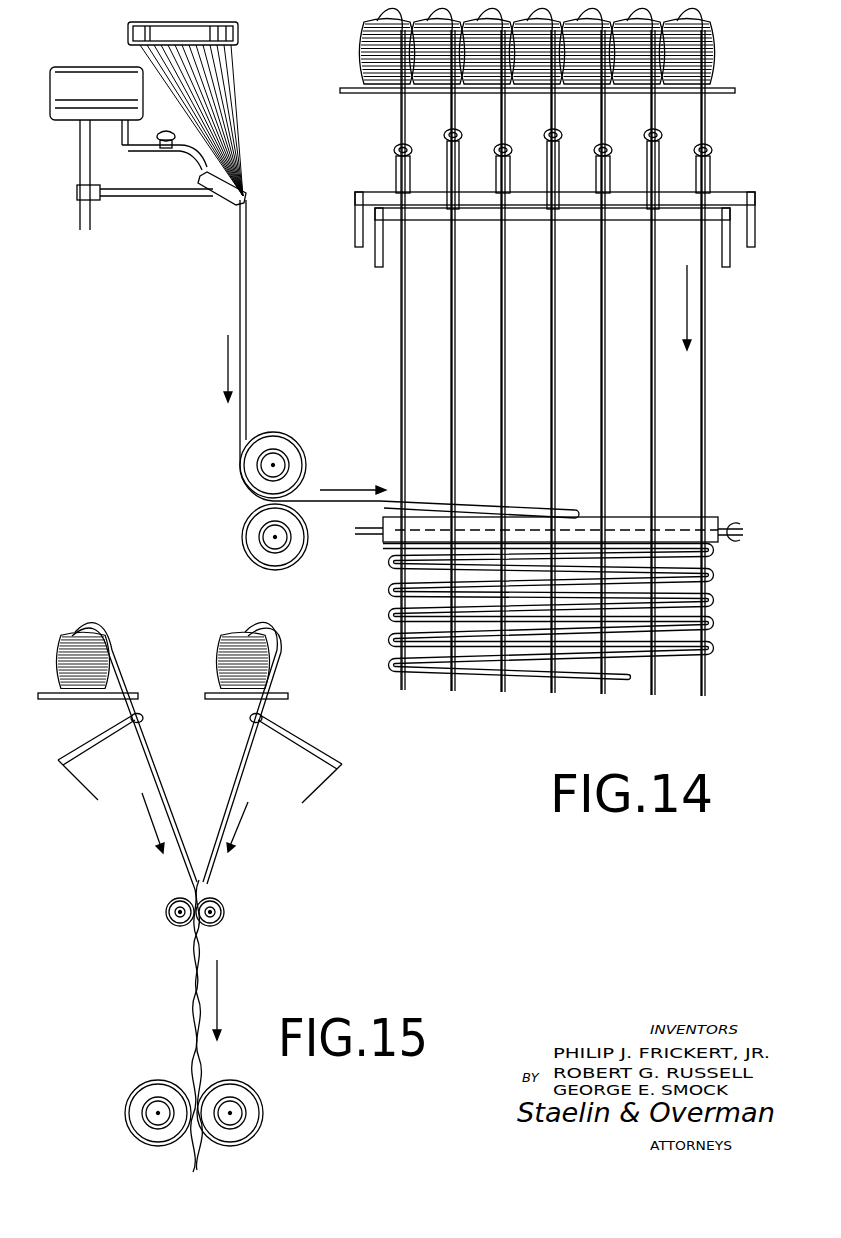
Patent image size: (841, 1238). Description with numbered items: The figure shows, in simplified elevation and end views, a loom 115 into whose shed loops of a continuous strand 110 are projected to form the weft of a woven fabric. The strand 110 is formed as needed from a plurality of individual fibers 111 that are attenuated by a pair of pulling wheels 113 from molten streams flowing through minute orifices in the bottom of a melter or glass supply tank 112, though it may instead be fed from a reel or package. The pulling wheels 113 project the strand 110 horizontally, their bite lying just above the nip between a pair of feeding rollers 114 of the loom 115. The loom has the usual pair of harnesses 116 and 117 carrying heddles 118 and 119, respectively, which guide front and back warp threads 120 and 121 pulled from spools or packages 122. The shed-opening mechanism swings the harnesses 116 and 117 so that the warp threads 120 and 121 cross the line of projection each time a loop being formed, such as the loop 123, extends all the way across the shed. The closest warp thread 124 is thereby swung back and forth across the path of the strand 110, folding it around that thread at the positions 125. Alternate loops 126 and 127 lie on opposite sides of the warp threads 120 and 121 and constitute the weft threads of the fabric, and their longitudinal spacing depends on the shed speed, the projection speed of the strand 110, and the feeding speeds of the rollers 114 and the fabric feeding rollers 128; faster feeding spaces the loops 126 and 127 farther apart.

In FIG. 14, the continuous strand 110 is at (246, 270).
In FIG. 14, the individual fibers 111 is at (250, 125).
In FIG. 14, the melter or glass supply tank 112 is at (128, 31).
In FIG. 14, the pulling wheels 113 is at (303, 446).
In FIG. 14, the feeding rollers 114 is at (707, 517).
In FIG. 15, the feeding rollers 114 is at (226, 922).
In FIG. 14, the loom 115 is at (727, 276).
In FIG. 15, the loom 115 is at (112, 806).
In FIG. 14, the harness 116 is at (392, 226).
In FIG. 15, the harness 116 is at (343, 768).
In FIG. 14, the harness 117 is at (372, 192).
In FIG. 15, the harness 117 is at (68, 785).
In FIG. 14, the heddles 118 is at (708, 168).
In FIG. 15, the heddles 118 is at (315, 755).
In FIG. 14, the heddles 119 is at (447, 152).
In FIG. 15, the heddles 119 is at (80, 752).
In FIG. 14, the front warp threads 120 is at (502, 396).
In FIG. 15, the front warp threads 120 is at (245, 786).
In FIG. 14, the back warp threads 121 is at (452, 360).
In FIG. 15, the back warp threads 121 is at (157, 778).
In FIG. 14, the spools or packages 122 is at (351, 47).
In FIG. 15, the spools or packages 122 is at (70, 630).
In FIG. 14, the loop 123 is at (594, 512).
In FIG. 15, the loop 123 is at (207, 887).
In FIG. 14, the closest warp thread 124 is at (400, 374).
In FIG. 14, the folding positions 125 is at (390, 665).
In FIG. 14, the loops 126 is at (713, 550).
In FIG. 14, the loops 127 is at (713, 575).
In FIG. 15, the fabric feeding rollers 128 is at (148, 1084).